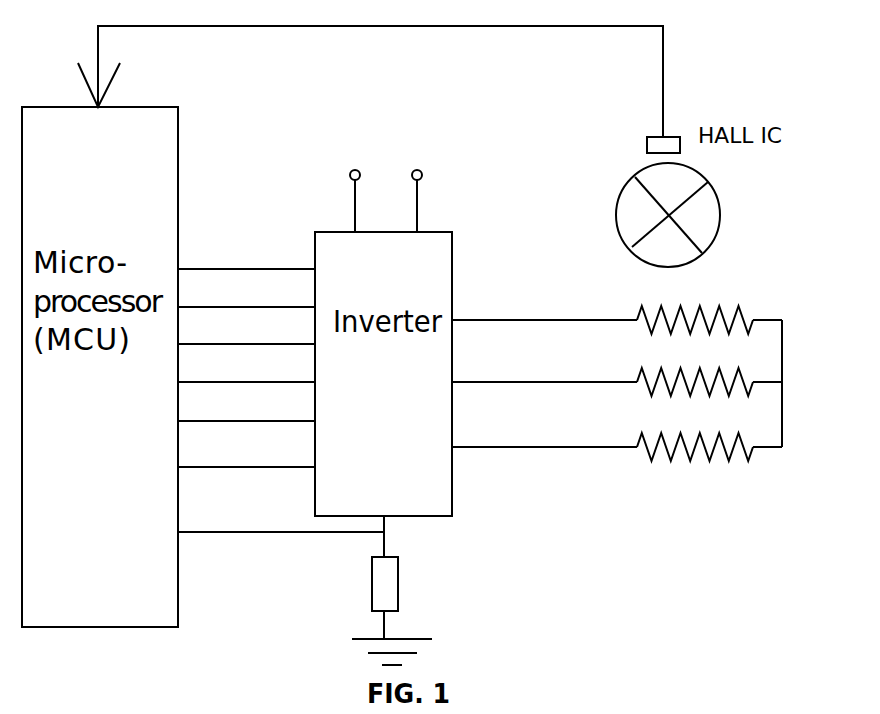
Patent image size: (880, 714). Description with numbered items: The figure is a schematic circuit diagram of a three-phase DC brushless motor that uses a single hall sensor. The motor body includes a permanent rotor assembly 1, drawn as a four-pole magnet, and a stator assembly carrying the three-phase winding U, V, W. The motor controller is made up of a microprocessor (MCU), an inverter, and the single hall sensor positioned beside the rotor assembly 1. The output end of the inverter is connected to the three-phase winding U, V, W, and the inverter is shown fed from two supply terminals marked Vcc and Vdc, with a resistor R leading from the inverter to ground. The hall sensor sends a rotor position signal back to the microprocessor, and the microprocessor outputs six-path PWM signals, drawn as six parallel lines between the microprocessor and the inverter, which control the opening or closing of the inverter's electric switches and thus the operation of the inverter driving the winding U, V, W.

The permanent rotor assembly 1 is at (724, 213).
The resistor R is at (402, 585).
The three-phase winding U is at (617, 333).
The three-phase winding V is at (617, 394).
The three-phase winding W is at (617, 461).
The Vcc supply terminal Vcc is at (344, 174).
The Vdc supply terminal Vdc is at (436, 174).
The PWM signals PWM is at (246, 341).